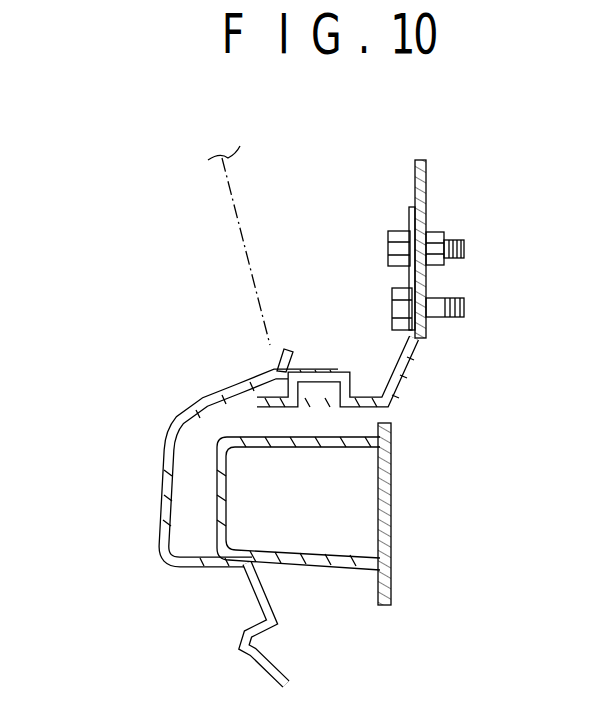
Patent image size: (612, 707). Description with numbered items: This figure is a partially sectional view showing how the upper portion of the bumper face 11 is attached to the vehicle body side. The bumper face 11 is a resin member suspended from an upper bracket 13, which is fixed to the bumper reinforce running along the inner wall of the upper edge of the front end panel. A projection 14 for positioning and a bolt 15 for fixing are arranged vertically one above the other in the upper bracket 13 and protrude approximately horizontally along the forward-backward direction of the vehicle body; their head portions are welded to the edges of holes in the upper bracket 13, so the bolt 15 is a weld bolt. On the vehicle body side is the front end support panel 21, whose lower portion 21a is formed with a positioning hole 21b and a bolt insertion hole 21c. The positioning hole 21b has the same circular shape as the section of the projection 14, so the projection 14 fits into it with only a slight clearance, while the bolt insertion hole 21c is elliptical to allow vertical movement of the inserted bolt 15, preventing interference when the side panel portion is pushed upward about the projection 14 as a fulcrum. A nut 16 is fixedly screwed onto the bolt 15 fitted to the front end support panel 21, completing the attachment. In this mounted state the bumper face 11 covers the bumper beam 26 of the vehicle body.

The bumper face 11 is at (150, 447).
The upper bracket 13 is at (408, 367).
The projection for positioning 14 is at (392, 300).
The bolt for fixing 15 is at (388, 245).
The nut 16 is at (444, 258).
The front end support panel 21 is at (402, 225).
The lower portion of front end support panel 21a is at (426, 196).
The positioning hole 21b is at (428, 320).
The bolt insertion hole 21c is at (437, 231).
The bumper beam 26 is at (398, 509).